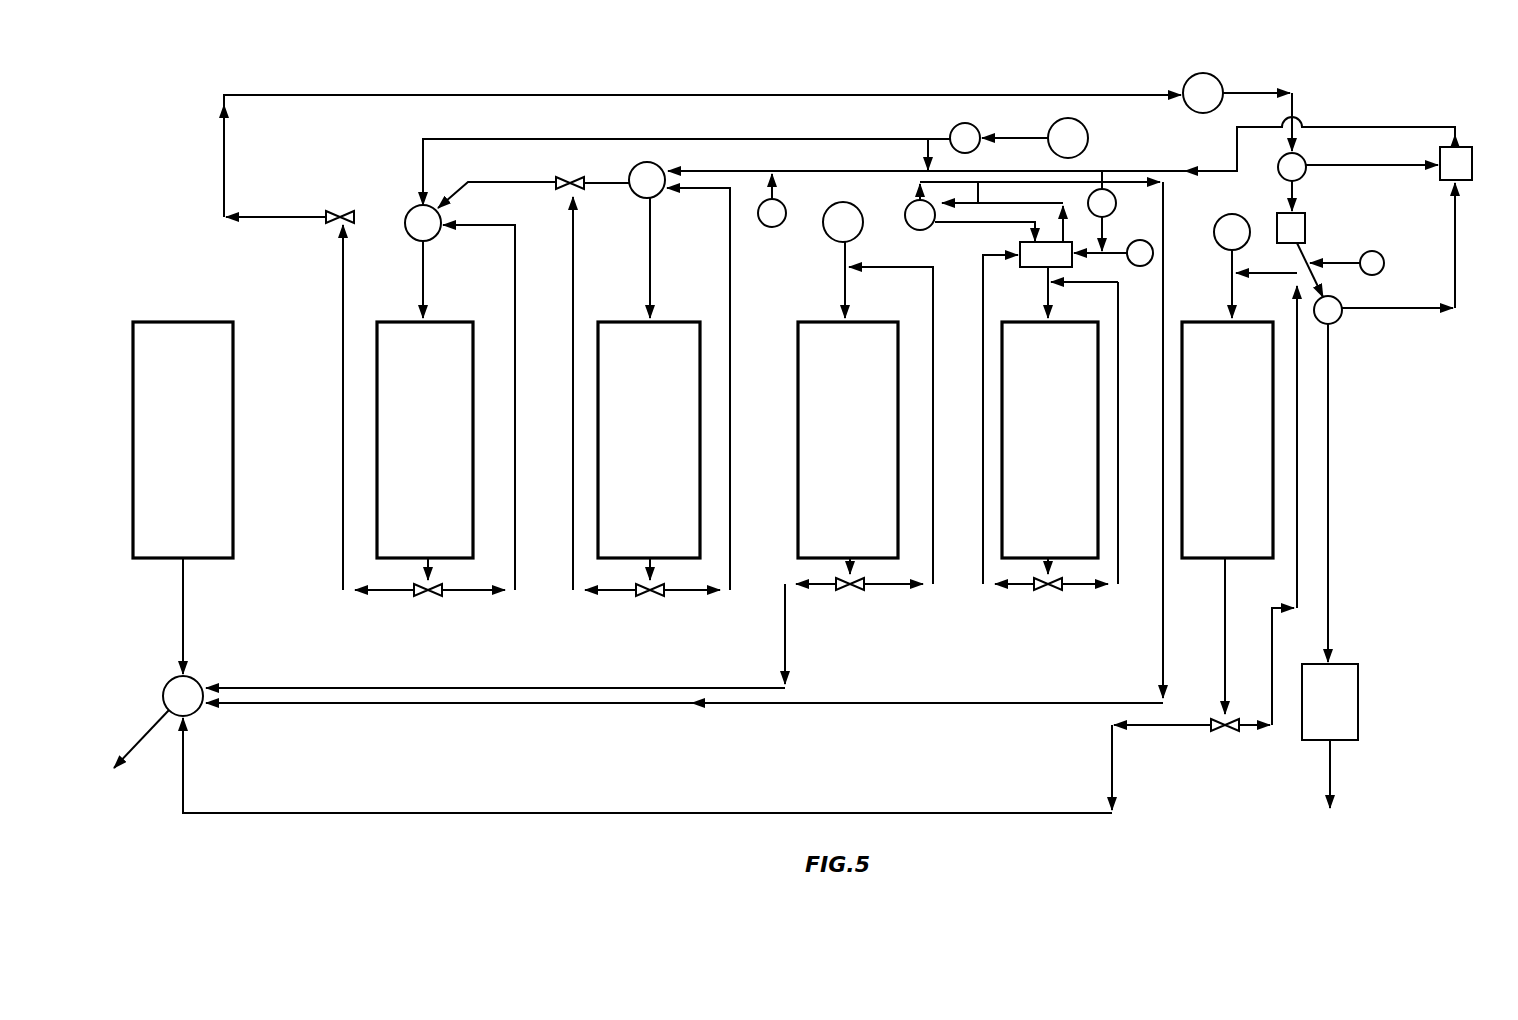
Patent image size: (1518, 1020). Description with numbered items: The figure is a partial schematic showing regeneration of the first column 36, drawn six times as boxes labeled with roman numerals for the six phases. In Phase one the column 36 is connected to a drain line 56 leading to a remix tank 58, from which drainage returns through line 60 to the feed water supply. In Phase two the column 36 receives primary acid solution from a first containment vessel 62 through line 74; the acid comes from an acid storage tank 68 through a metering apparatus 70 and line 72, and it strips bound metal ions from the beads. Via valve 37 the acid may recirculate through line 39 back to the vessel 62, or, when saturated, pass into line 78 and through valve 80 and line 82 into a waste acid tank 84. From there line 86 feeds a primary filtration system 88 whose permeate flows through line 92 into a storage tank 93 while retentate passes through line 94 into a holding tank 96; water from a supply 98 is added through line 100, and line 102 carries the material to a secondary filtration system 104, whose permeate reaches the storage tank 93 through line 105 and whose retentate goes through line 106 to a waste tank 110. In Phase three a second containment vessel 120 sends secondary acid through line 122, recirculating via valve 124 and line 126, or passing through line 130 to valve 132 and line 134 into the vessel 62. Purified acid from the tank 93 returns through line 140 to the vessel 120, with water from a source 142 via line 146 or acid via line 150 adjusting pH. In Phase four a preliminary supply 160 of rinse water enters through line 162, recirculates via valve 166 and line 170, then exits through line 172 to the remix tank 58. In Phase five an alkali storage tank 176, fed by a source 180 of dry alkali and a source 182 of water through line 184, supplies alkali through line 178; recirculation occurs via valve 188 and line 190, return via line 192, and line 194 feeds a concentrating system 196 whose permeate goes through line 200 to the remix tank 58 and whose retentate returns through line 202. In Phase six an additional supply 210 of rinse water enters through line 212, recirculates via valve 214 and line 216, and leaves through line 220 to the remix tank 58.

The first column 36 is at (235, 390).
The valve 37 is at (430, 598).
The line 39 is at (517, 462).
The drain line 56 is at (190, 596).
The remix tank 58 is at (198, 678).
The line 60 is at (150, 718).
The first containment vessel 62 is at (411, 210).
The acid storage tank 68 is at (1086, 130).
The metering apparatus 70 is at (978, 128).
The line 72 is at (785, 139).
The line 74 is at (428, 274).
The line 78 is at (340, 300).
The valve 80 is at (338, 208).
The line 82 is at (908, 95).
The waste acid tank 84 is at (1221, 86).
The line 86 is at (1300, 128).
The primary filtration system 88 is at (1302, 176).
The line 92 is at (1377, 165).
The storage tank 93 is at (1466, 147).
The line 94 is at (1288, 188).
The holding tank 96 is at (1306, 222).
The supply of water 98 is at (1384, 262).
The line 100 is at (1338, 263).
The line 102 is at (1312, 275).
The secondary filtration system 104 is at (1340, 316).
The line 105 is at (1410, 308).
The line 106 is at (1330, 480).
The waste tank 110 is at (1360, 682).
The second containment vessel 120 is at (660, 195).
The line 122 is at (652, 270).
The valve 124 is at (652, 598).
The line 126 is at (732, 505).
The line 130 is at (574, 290).
The valve 132 is at (575, 180).
The line 134 is at (488, 182).
The line 140 is at (1170, 170).
The source of water 142 is at (770, 228).
The line 146 is at (776, 203).
The line 150 is at (924, 150).
The preliminary supply of rinse water 160 is at (856, 208).
The line 162 is at (843, 285).
The valve 166 is at (852, 592).
The line 170 is at (934, 584).
The line 172 is at (788, 662).
The alkali storage tank 176 is at (1028, 268).
The line 178 is at (1038, 290).
The source of dry alkali material 180 is at (1140, 266).
The source of water 182 is at (1100, 189).
The line 184 is at (1108, 252).
The valve 188 is at (1050, 592).
The line 190 is at (1119, 584).
The line 192 is at (984, 584).
The line 194 is at (980, 182).
The concentrating system 196 is at (912, 226).
The line 200 is at (945, 703).
The line 202 is at (985, 224).
The additional supply of rinse water 210 is at (1219, 222).
The line 212 is at (1228, 278).
The valve 214 is at (1228, 735).
The line 216 is at (1296, 598).
The line 220 is at (555, 815).